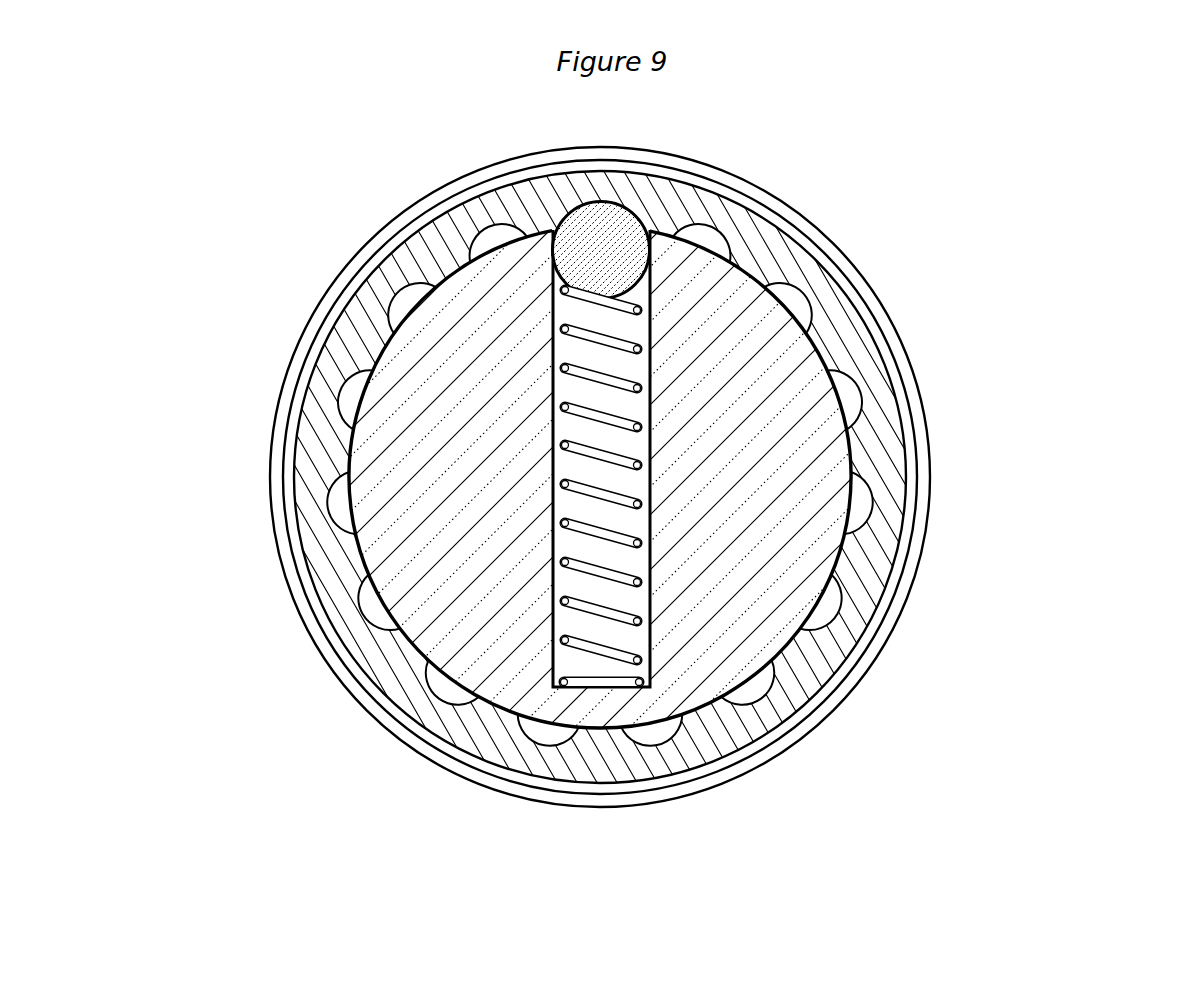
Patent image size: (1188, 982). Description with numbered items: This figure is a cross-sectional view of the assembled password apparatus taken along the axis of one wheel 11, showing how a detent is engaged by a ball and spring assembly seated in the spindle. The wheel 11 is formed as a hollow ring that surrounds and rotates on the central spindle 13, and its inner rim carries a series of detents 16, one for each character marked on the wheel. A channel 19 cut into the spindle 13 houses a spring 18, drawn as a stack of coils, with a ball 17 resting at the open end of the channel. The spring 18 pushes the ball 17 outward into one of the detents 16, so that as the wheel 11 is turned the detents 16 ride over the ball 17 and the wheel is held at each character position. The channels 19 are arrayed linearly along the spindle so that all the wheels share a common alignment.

The wheel 11 is at (474, 734).
The central spindle 13 is at (455, 455).
The detents 16 is at (826, 608).
The ball 17 is at (597, 252).
The spring 18 is at (573, 462).
The channels 19 is at (655, 574).